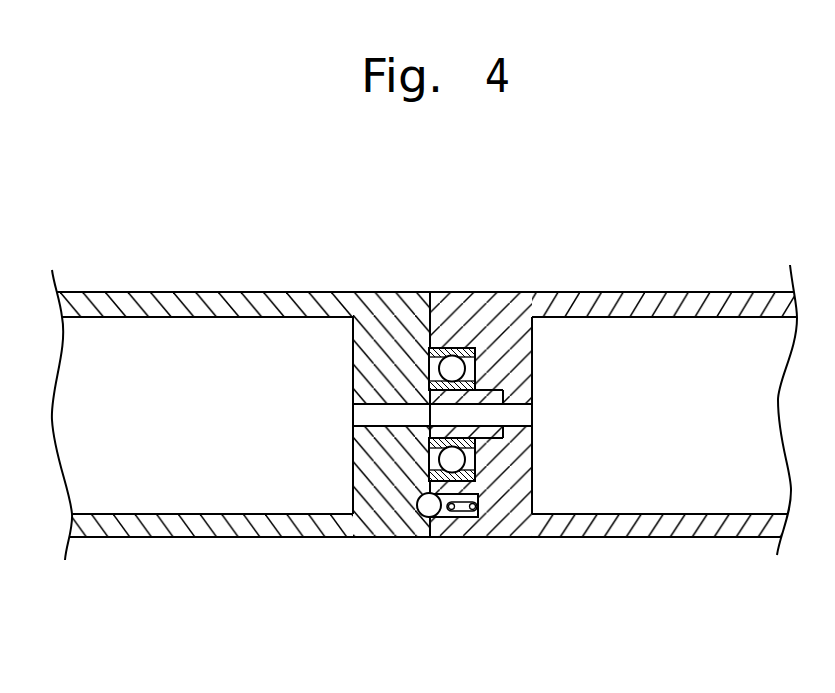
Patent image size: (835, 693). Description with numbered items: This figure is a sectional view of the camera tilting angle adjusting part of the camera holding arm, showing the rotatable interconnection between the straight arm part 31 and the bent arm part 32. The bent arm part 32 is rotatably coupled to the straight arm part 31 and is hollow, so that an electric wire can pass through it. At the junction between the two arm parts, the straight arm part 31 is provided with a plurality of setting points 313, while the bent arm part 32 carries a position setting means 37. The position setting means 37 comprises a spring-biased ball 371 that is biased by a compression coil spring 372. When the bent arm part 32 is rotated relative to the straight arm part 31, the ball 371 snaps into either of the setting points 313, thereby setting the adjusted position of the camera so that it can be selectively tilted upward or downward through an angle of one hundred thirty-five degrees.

The straight arm part 31 is at (204, 298).
The setting points 313 is at (420, 333).
The bent arm part 32 is at (668, 300).
The position setting means 37 is at (450, 508).
The spring-biased ball 371 is at (433, 517).
The compression coil spring 372 is at (473, 509).